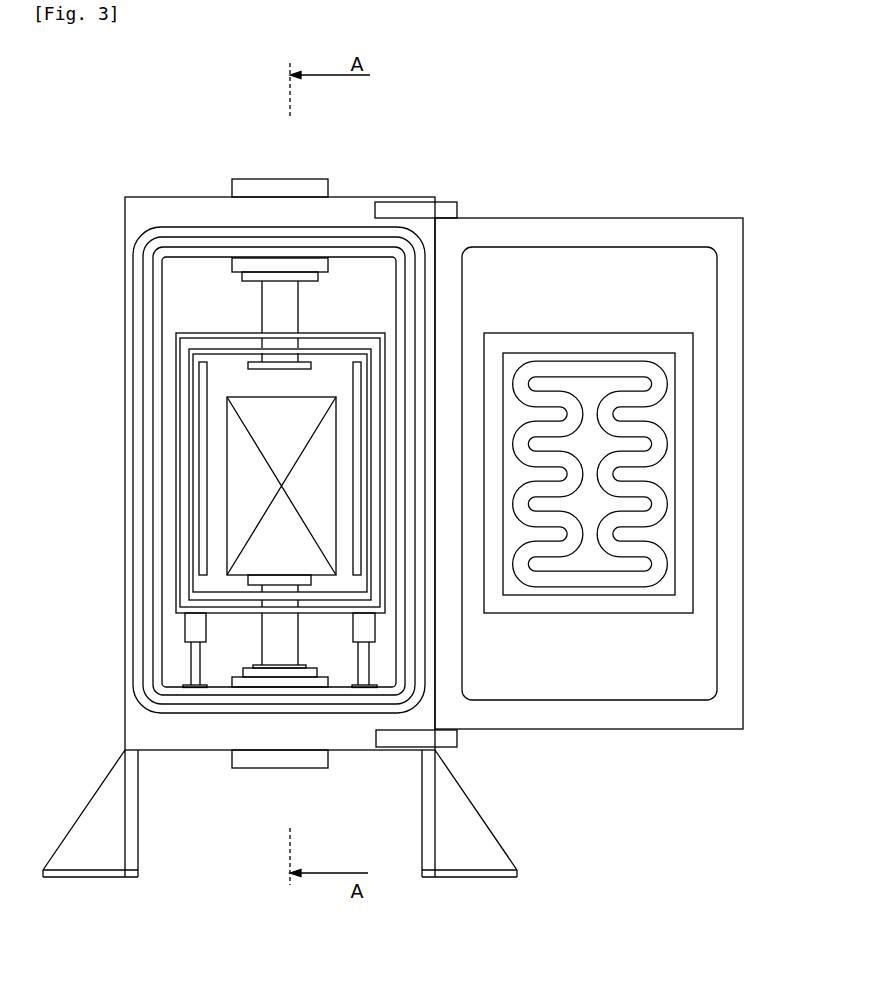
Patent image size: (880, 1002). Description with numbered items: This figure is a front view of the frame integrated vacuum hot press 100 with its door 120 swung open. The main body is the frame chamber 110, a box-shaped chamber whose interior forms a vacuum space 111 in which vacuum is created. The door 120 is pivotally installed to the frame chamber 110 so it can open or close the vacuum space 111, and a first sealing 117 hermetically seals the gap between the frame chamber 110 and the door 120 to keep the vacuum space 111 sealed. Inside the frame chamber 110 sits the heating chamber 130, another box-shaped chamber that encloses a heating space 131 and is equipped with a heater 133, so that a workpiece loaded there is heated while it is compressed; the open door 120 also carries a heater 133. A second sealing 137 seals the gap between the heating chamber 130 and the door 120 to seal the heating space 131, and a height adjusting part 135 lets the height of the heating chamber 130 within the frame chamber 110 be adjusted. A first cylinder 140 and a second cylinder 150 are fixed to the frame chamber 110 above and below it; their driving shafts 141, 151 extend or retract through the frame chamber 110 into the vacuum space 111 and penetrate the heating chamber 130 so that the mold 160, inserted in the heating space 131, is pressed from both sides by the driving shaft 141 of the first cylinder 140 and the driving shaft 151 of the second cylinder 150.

The frame integrated vacuum hot press 100 is at (126, 160).
The frame chamber 110 is at (186, 212).
The vacuum space 111 is at (347, 302).
The first sealing 117 is at (145, 336).
The door 120 is at (586, 222).
The heating chamber 130 is at (215, 332).
The heating space 131 is at (257, 386).
The heater 133 is at (358, 533).
The height adjusting part 135 is at (194, 627).
The second sealing 137 is at (182, 425).
The first cylinder 140 is at (293, 185).
The driving shaft 141 is at (273, 310).
The second cylinder 150 is at (275, 761).
The driving shaft 151 is at (277, 642).
The mold 160 is at (248, 492).